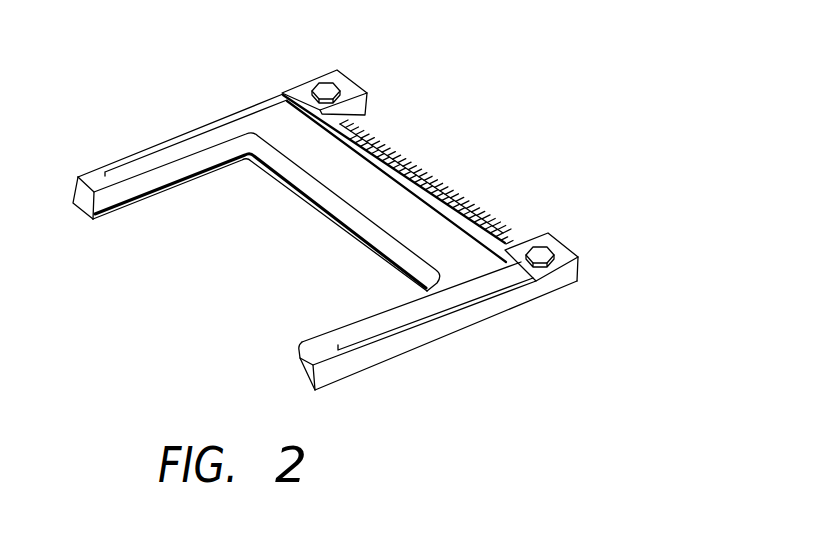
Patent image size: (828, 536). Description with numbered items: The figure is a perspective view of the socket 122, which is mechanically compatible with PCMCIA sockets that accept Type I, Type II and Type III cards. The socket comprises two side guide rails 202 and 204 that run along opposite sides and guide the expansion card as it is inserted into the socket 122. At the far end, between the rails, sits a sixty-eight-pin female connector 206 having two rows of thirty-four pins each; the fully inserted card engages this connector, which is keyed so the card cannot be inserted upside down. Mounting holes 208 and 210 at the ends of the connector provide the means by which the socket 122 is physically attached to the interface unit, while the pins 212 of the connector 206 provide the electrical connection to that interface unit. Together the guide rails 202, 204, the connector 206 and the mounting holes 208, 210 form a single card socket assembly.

The socket 122 is at (607, 140).
The side guide rail 202 is at (157, 143).
The side guide rail 204 is at (405, 337).
The 68-pin female connector 206 is at (307, 193).
The mounting hole 208 is at (320, 85).
The mounting hole 210 is at (541, 262).
The pins 212 is at (483, 235).